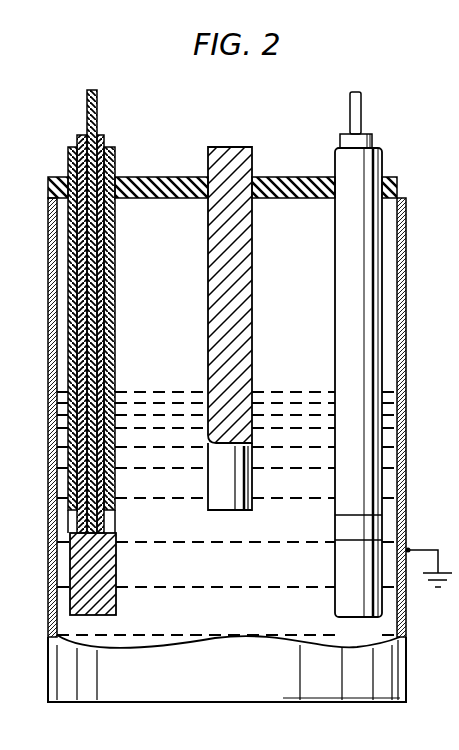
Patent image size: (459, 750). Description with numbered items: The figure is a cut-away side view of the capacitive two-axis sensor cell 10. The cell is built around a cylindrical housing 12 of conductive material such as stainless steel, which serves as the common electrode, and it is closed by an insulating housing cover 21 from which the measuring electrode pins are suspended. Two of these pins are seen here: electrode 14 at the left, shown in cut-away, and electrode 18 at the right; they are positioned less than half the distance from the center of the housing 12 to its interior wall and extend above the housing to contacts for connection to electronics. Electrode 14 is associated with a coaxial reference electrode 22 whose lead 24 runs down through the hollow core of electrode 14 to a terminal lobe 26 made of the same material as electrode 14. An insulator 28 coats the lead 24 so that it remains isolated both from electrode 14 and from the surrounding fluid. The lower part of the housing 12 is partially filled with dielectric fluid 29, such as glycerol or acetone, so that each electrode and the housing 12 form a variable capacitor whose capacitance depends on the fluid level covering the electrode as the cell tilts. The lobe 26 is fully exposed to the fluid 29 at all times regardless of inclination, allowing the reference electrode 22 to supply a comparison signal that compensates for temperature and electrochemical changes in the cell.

The capacitive two-axis sensor cell 10 is at (53, 146).
The housing 12 is at (404, 256).
The measuring electrode pin 14 is at (70, 342).
The measuring electrode pin 18 is at (383, 158).
The insulating housing cover 21 is at (162, 177).
The coaxial reference electrode 22 is at (97, 100).
The lead 24 is at (77, 280).
The terminal lobe 26 is at (78, 568).
The insulator 28 is at (100, 347).
The dielectric fluid 29 is at (226, 619).